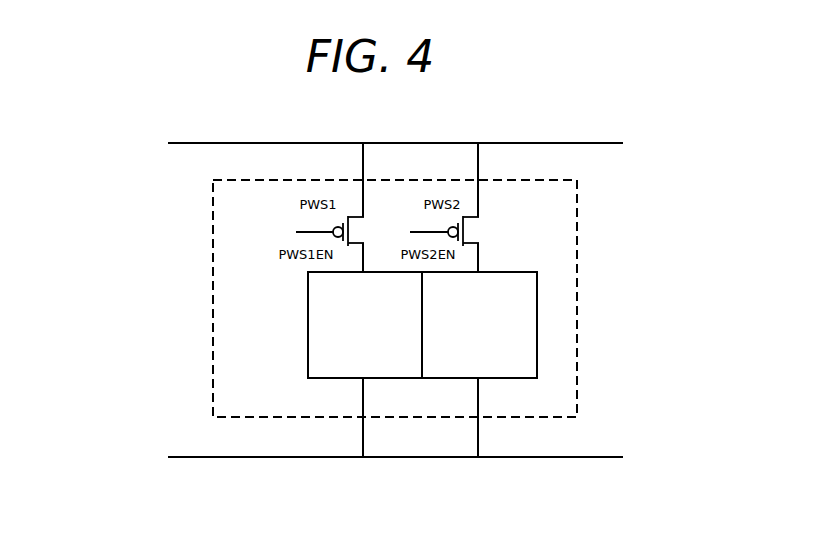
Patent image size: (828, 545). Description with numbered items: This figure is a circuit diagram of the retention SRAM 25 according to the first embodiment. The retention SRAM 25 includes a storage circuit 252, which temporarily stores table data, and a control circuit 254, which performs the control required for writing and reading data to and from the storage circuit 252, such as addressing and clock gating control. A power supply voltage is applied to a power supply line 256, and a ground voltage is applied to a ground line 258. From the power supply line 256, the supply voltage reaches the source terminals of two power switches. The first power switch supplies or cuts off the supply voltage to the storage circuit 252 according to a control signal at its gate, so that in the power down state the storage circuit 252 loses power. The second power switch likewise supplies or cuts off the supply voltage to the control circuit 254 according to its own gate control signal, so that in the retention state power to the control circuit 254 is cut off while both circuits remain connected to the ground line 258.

The power supply line 256 is at (258, 141).
The ground line 258 is at (258, 455).
The retention SRAM 25 is at (579, 294).
The storage circuit 252 is at (397, 380).
The control circuit 254 is at (507, 380).